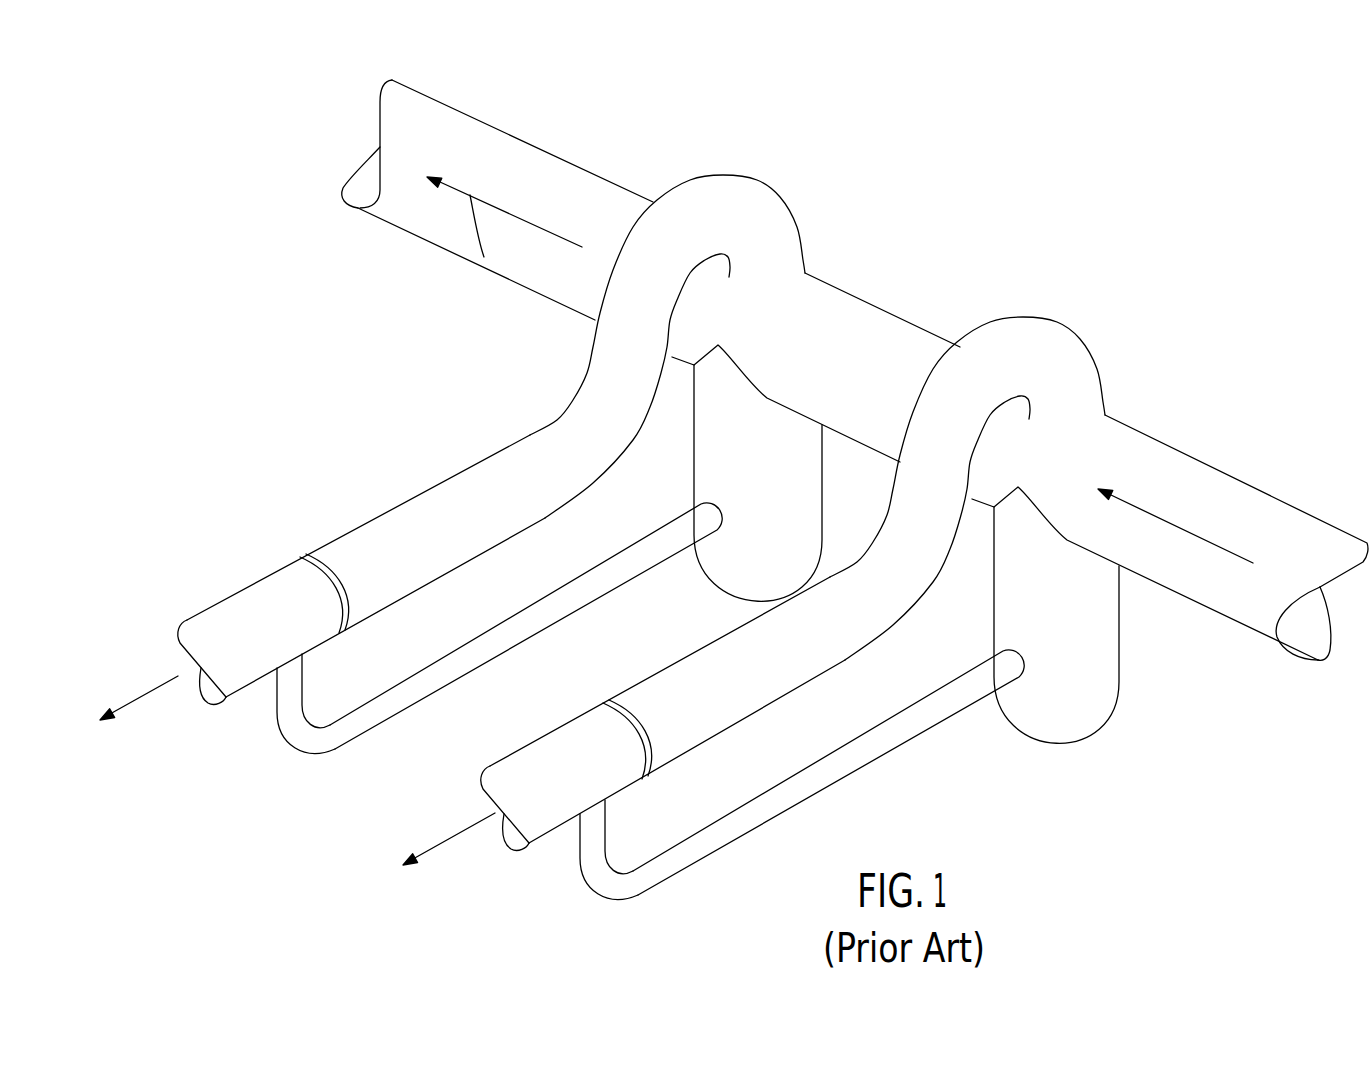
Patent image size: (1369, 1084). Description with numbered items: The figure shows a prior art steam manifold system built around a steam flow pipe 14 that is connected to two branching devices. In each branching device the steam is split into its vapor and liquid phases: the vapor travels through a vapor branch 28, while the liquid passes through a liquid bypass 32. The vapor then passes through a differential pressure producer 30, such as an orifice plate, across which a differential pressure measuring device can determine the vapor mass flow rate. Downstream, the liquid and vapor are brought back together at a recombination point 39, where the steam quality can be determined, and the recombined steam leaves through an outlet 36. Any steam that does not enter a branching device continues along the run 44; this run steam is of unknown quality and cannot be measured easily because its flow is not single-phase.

The steam flow pipe 14 is at (1196, 458).
The run 44 is at (590, 172).
The vapor branch 28 is at (487, 551).
The differential pressure producer 30 is at (340, 637).
The liquid bypass 32 is at (550, 628).
The outlet 36 is at (207, 608).
The recombination point 39 is at (266, 686).